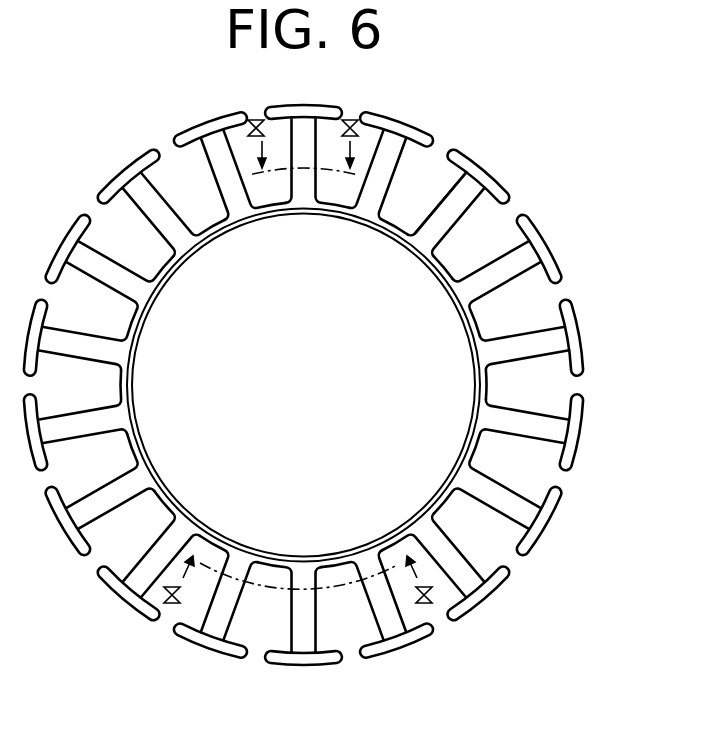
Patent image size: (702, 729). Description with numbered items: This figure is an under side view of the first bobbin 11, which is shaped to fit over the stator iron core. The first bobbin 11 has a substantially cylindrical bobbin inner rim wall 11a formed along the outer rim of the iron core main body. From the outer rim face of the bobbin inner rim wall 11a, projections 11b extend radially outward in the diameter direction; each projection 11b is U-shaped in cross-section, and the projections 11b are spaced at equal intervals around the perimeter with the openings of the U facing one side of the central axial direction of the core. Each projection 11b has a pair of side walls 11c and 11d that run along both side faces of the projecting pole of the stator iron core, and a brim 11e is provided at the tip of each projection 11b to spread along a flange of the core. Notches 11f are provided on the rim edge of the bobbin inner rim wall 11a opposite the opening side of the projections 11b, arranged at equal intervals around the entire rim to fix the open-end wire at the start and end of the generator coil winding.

The first bobbin 11 is at (476, 186).
The bobbin inner rim wall 11a is at (382, 228).
The projection 11b is at (448, 213).
The side wall 11c is at (443, 268).
The side wall 11d is at (440, 202).
The brim 11e is at (572, 338).
The notch 11f is at (457, 303).